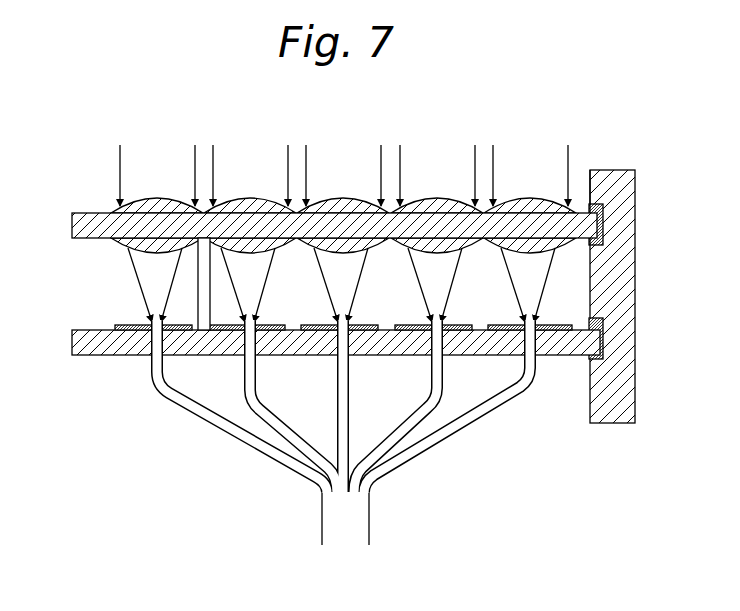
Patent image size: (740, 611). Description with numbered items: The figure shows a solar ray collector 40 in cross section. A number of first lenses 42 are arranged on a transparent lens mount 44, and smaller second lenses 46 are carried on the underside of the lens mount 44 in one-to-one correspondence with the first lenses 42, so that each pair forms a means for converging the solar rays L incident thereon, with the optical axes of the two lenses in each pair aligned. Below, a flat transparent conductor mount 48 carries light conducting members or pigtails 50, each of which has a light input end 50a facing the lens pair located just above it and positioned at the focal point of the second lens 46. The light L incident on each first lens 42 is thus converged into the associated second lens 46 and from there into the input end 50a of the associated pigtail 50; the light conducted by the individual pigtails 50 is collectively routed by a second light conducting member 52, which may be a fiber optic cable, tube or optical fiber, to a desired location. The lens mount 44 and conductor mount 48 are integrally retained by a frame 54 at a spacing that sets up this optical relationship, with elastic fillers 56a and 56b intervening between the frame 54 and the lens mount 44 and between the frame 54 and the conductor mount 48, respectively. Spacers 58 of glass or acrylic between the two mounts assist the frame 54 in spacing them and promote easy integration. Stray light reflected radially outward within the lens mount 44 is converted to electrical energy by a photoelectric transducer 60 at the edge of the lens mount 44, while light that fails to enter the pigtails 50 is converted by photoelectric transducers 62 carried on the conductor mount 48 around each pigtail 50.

The collector 40 is at (490, 124).
The first lens 42 is at (160, 203).
The lens mount 44 is at (95, 215).
The second lens 46 is at (157, 253).
The conductor mount 48 is at (96, 342).
The pigtail 50 is at (524, 376).
The light input end 50a is at (150, 323).
The second light conducting member 52 is at (370, 510).
The frame 54 is at (617, 423).
The elastic filler 56a is at (603, 226).
The elastic filler 56b is at (604, 340).
The spacer 58 is at (210, 284).
The photoelectric transducer 60 is at (600, 210).
The photoelectric transducer 62 is at (128, 352).
The solar rays L is at (344, 164).